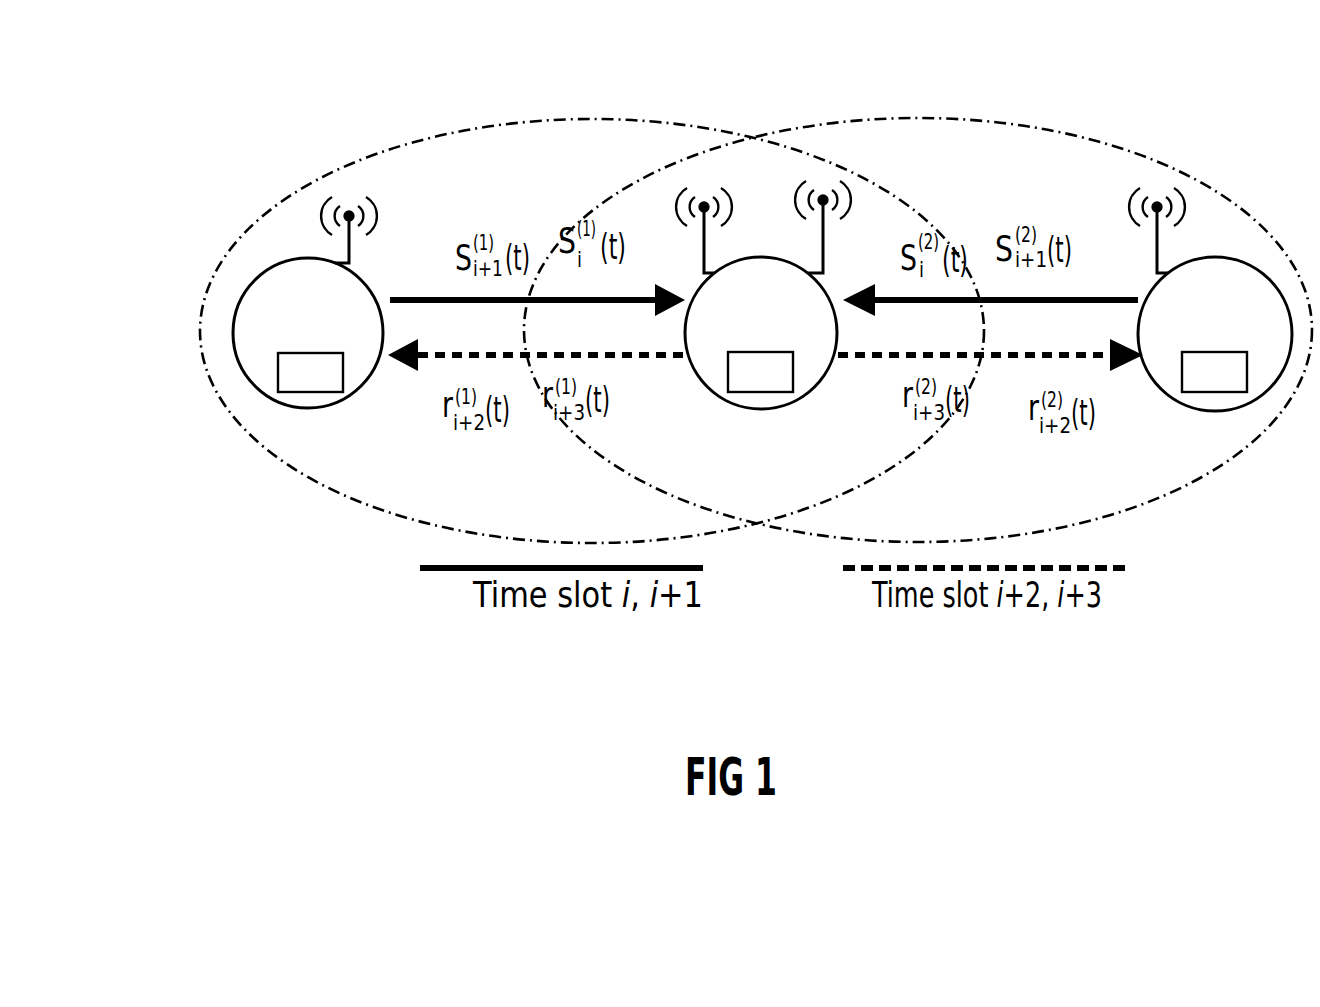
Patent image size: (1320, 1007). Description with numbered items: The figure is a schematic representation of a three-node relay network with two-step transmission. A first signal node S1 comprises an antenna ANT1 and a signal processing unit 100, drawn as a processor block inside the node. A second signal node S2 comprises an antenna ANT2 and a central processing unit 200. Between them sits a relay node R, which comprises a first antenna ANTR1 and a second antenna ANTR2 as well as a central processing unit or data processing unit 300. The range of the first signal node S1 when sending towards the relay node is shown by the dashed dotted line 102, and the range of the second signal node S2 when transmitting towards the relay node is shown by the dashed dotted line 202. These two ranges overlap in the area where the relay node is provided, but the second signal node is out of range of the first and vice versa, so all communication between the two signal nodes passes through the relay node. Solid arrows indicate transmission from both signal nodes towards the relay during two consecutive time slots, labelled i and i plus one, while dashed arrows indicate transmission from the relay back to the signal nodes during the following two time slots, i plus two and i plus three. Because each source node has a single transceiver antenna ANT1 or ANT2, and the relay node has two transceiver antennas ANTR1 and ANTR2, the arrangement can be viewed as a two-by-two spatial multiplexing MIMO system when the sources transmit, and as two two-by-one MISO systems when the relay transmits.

The signal processing unit 100 is at (280, 383).
The central processing unit 200 is at (1230, 393).
The central processing unit or data processing unit 300 is at (778, 393).
The dashed dotted line 102 is at (373, 158).
The dashed dotted line 202 is at (1030, 130).
The antenna ANT1 is at (318, 213).
The antenna ANT2 is at (1188, 212).
The first antenna ANTR1 is at (702, 255).
The second antenna ANTR2 is at (825, 232).